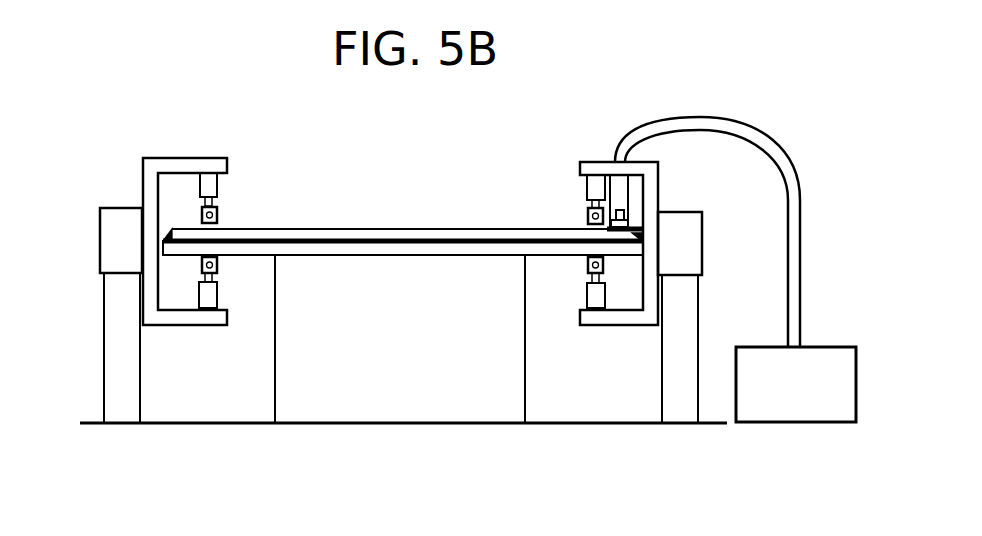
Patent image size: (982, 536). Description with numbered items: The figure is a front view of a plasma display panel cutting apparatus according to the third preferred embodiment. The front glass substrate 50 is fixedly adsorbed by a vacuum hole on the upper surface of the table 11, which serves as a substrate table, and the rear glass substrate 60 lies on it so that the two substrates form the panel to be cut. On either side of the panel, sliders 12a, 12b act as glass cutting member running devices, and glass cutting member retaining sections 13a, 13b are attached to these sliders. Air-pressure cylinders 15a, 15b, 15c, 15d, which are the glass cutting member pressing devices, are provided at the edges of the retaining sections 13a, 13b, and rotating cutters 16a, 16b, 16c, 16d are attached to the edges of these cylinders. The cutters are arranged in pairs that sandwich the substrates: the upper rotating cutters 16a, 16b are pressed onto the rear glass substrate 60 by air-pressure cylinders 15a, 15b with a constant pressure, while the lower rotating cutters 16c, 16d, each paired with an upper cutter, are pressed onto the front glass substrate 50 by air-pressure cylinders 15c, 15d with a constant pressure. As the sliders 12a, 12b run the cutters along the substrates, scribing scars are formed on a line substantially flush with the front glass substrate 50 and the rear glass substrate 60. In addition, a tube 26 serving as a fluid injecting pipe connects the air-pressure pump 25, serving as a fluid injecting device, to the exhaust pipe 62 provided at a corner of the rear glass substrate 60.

The table 11 is at (388, 385).
The slider 12a is at (122, 228).
The slider 12b is at (685, 242).
The glass cutting member retaining section 13a is at (153, 167).
The glass cutting member retaining section 13b is at (635, 170).
The air-pressure cylinder 15a is at (212, 190).
The air-pressure cylinder 15b is at (595, 188).
The air-pressure cylinder 15c is at (212, 300).
The air-pressure cylinder 15d is at (597, 303).
The rotating cutter 16a is at (217, 218).
The rotating cutter 16b is at (592, 220).
The rotating cutter 16c is at (218, 280).
The rotating cutter 16d is at (595, 278).
The air-pressure pump 25 is at (812, 408).
The tube 26 is at (797, 193).
The front glass substrate 50 is at (403, 248).
The rear glass substrate 60 is at (362, 238).
The exhaust pipe 62 is at (627, 218).